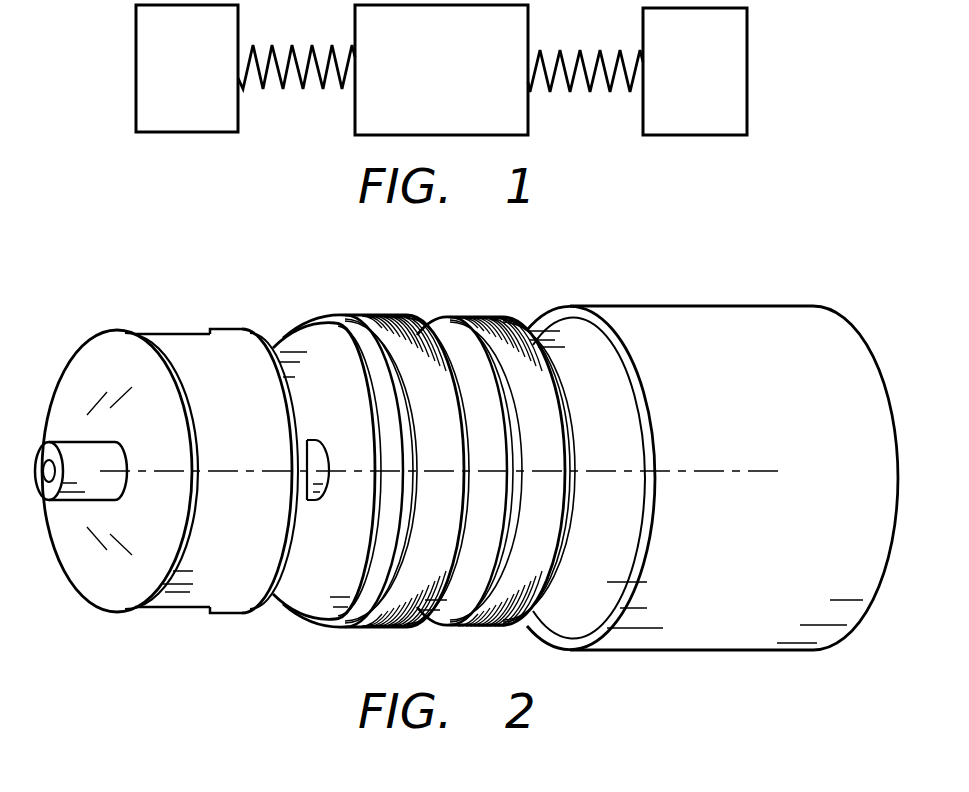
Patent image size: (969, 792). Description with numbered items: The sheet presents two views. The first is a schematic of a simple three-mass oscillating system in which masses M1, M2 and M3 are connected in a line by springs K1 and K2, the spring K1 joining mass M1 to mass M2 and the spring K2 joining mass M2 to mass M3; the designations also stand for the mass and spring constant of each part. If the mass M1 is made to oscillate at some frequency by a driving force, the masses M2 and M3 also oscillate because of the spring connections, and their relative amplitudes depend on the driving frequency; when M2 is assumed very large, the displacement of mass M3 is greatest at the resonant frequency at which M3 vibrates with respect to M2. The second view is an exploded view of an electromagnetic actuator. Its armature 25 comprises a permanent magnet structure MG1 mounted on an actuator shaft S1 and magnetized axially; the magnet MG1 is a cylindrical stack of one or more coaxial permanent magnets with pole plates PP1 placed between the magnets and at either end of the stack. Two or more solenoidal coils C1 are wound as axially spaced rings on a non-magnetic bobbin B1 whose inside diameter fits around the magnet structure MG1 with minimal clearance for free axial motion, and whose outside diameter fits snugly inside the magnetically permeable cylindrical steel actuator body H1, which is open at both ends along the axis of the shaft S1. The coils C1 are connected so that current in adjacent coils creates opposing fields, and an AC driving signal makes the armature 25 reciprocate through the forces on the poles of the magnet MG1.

In FIG. 1, the mass M1 is at (170, 77).
In FIG. 1, the mass M2 is at (424, 77).
In FIG. 1, the mass M3 is at (678, 78).
In FIG. 1, the spring K1 is at (312, 45).
In FIG. 1, the spring K2 is at (602, 50).
In FIG. 2, the armature 25 is at (176, 632).
In FIG. 2, the actuator shaft S1 is at (68, 448).
In FIG. 2, the permanent magnet structure MG1 is at (215, 460).
In FIG. 2, the pole plates PP1 is at (240, 328).
In FIG. 2, the bobbin B1 is at (372, 549).
In FIG. 2, the solenoidal coils C1 is at (425, 460).
In FIG. 2, the actuator body H1 is at (757, 460).